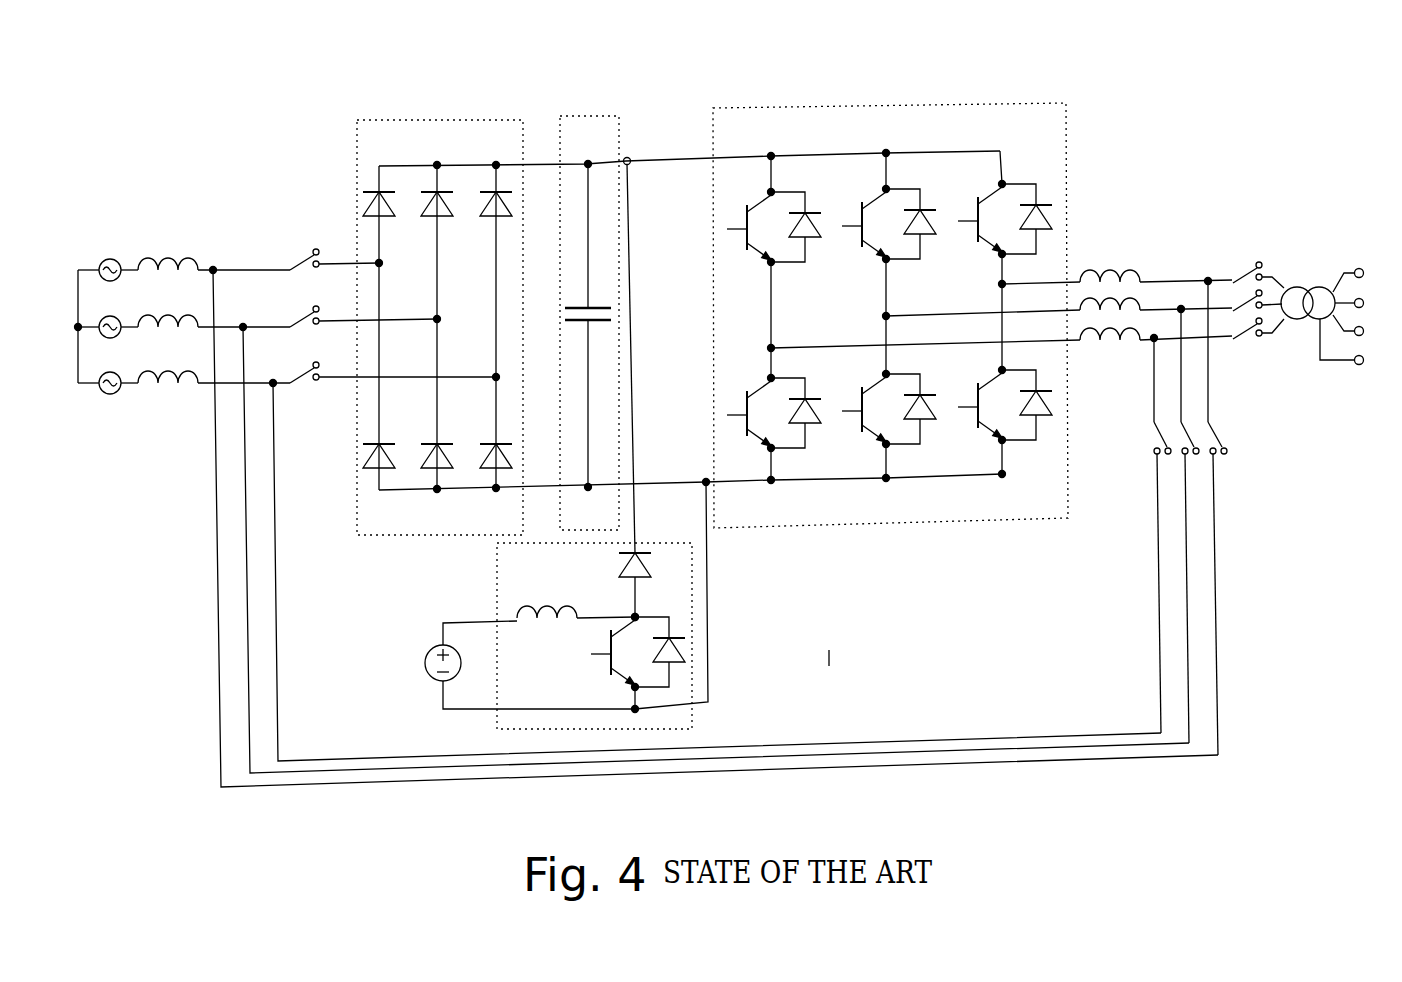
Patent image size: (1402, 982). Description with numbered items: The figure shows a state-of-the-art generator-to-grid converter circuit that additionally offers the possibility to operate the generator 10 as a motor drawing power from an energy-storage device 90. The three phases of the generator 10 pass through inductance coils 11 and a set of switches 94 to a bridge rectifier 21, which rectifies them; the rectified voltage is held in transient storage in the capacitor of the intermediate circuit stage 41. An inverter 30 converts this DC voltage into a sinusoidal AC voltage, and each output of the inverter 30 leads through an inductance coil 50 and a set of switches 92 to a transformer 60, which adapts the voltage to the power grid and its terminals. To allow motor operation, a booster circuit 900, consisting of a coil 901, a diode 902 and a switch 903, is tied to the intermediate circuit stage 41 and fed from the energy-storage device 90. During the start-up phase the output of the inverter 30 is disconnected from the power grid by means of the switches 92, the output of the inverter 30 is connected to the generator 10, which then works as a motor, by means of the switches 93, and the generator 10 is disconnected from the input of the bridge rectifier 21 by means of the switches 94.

The generator 10 is at (102, 238).
The input inductors 11 is at (205, 235).
The switches 94 is at (389, 233).
The bridge rectifier 21 is at (678, 286).
The intermediate circuit stage 41 is at (589, 283).
The inverter 30 is at (852, 278).
The inductance coil 50 is at (1156, 220).
The switches 92 is at (1255, 218).
The transformer 60 is at (1333, 234).
The switches 93 is at (1250, 433).
The booster circuit 900 is at (705, 622).
The energy-storage device 90 is at (506, 665).
The coil 901 is at (571, 631).
The diode 902 is at (604, 585).
The switch 903 is at (616, 663).